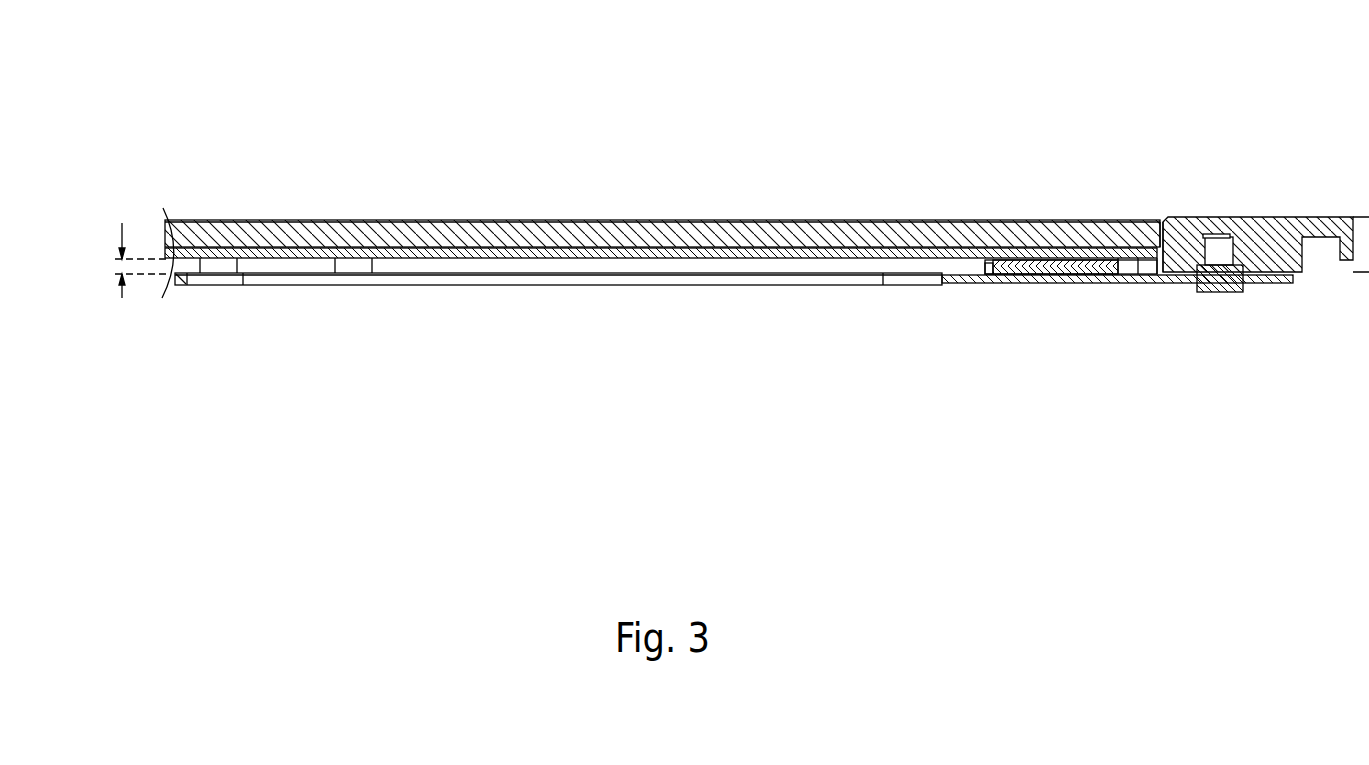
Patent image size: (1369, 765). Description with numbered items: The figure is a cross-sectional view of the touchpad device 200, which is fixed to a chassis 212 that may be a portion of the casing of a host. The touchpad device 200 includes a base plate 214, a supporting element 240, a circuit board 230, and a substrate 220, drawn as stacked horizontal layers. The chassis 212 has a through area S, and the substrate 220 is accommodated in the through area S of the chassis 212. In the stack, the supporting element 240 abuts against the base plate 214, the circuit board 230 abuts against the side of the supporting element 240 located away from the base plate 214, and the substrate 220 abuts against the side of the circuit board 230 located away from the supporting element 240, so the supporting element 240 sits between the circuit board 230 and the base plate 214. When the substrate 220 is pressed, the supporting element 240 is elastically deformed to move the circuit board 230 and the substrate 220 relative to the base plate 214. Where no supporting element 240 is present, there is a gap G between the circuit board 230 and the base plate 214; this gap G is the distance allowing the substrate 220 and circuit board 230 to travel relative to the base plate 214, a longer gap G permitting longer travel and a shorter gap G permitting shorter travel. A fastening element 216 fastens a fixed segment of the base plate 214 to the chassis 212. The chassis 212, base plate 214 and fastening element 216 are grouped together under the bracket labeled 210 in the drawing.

The touchpad device 200 is at (1257, 59).
The frame assembly 210 is at (1155, 290).
The chassis 212 is at (1262, 258).
The base plate 214 is at (1302, 373).
The fastening element 216 is at (1223, 235).
The substrate 220 is at (540, 230).
The circuit board 230 is at (548, 252).
The supporting element 240 is at (1043, 265).
The gap G is at (128, 260).
The through area S is at (1167, 220).